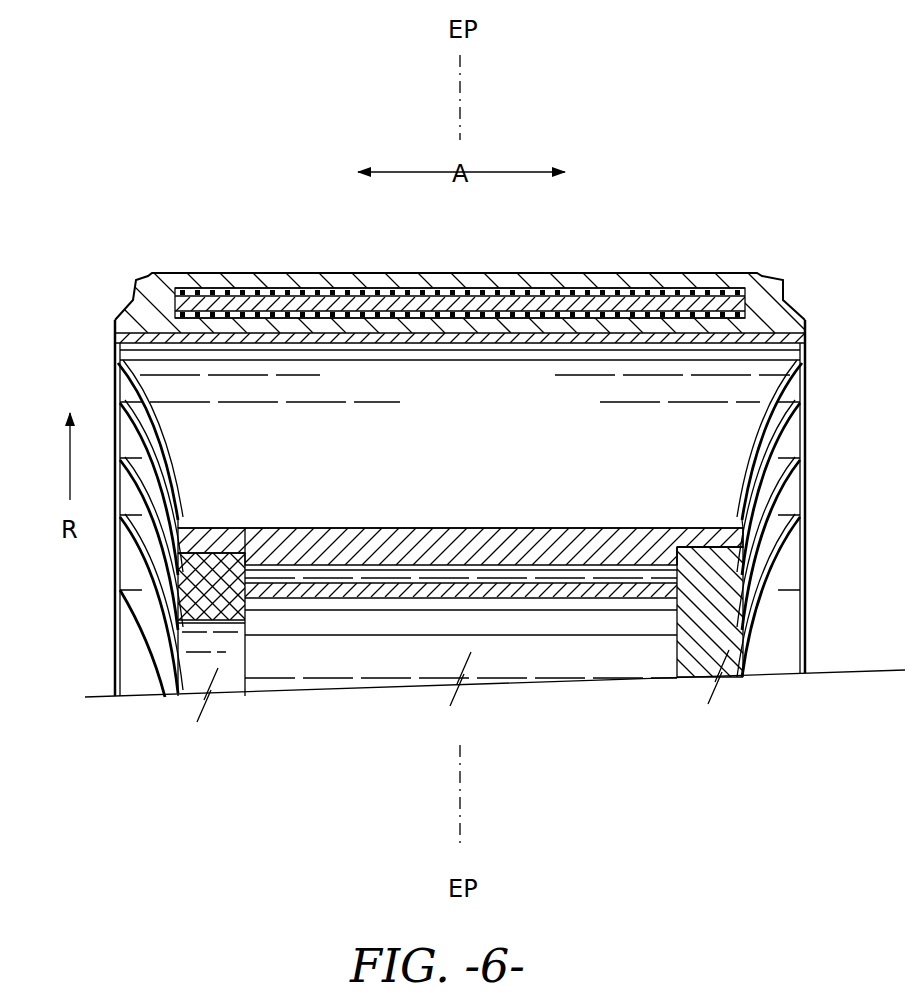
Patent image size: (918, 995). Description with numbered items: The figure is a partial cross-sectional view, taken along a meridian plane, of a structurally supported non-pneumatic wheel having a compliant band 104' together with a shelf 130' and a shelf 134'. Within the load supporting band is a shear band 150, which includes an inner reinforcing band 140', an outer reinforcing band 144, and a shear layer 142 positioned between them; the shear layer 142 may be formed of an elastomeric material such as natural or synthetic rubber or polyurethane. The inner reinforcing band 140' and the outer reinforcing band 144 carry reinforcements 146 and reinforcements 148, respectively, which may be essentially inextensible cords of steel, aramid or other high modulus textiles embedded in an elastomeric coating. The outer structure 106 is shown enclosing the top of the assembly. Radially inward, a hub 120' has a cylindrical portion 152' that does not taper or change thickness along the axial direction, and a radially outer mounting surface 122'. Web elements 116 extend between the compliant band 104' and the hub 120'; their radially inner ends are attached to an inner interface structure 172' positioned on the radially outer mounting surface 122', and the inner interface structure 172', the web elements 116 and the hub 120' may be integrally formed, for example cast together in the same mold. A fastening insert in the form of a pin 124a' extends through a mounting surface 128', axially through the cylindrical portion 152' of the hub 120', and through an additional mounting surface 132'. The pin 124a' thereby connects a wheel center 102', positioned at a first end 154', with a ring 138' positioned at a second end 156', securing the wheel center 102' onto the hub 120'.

The wheel center 102' is at (711, 644).
The compliant band 104' is at (487, 293).
The housing 106 is at (668, 268).
The web elements 116 is at (758, 418).
The hub 120' is at (460, 507).
The radially outer mounting surface 122' is at (461, 484).
The pin 124a' is at (462, 582).
The mounting surface 128' is at (688, 516).
The shelf 130' is at (665, 505).
The additional mounting surface 132' is at (146, 624).
The shelf 134' is at (266, 508).
The ring 138' is at (212, 531).
The inner reinforcing band 140' is at (462, 354).
The shear layer 142 is at (617, 295).
The outer reinforcing band 144 is at (523, 293).
The reinforcements 146 is at (303, 313).
The reinforcements 148 is at (257, 290).
The shear band 150 is at (168, 290).
The cylindrical portion 152' is at (465, 515).
The first end 154' is at (689, 467).
The second end 156' is at (234, 469).
The inner interface structure 172' is at (640, 500).